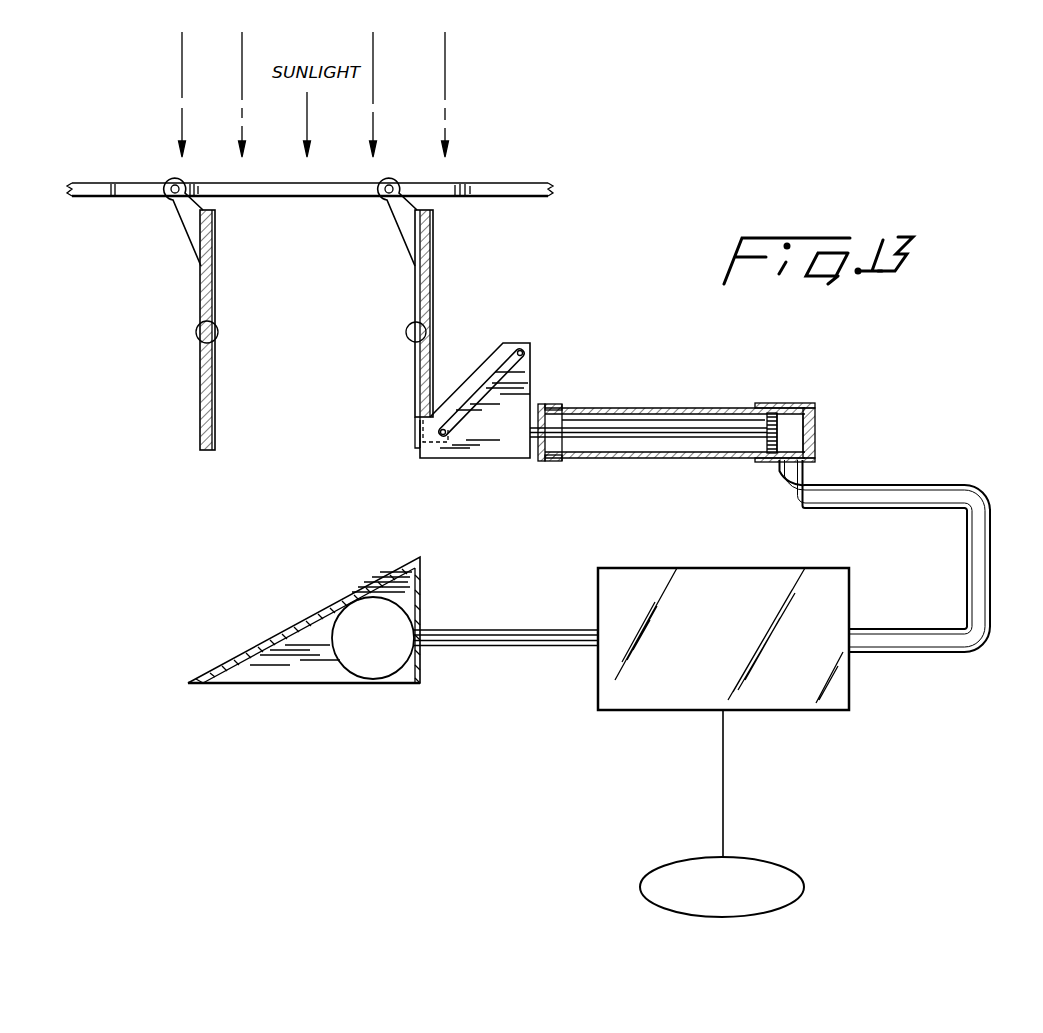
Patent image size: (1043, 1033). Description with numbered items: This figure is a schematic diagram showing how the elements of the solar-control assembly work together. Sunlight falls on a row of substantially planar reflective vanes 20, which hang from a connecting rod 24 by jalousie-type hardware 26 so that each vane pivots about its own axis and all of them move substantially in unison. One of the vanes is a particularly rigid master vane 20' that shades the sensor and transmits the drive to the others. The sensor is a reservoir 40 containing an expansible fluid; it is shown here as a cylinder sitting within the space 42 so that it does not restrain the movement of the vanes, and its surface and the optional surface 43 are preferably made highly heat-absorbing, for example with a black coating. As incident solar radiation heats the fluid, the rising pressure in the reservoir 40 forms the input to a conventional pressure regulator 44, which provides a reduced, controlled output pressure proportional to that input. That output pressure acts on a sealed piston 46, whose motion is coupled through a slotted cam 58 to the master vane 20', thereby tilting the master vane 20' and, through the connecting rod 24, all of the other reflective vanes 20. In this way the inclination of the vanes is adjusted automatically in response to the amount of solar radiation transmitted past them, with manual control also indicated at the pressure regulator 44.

The connecting rod 24 is at (510, 183).
The jalousie-type hardware 26 is at (172, 197).
The reflective vane 20 is at (238, 330).
The master vane 20' is at (454, 329).
The slotted cam 58 is at (530, 385).
The sealed piston 46 is at (720, 408).
The pressure regulator 44 is at (623, 572).
The optional surface 43 is at (243, 647).
The space 42 is at (310, 672).
The reservoir 40 is at (377, 668).